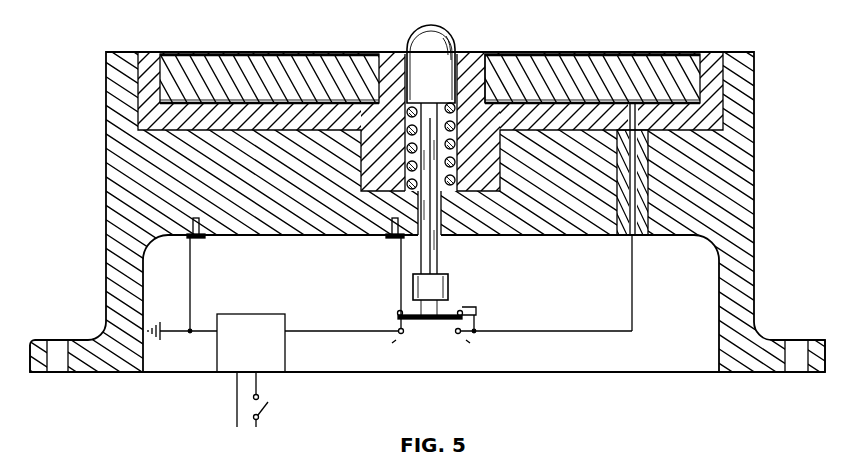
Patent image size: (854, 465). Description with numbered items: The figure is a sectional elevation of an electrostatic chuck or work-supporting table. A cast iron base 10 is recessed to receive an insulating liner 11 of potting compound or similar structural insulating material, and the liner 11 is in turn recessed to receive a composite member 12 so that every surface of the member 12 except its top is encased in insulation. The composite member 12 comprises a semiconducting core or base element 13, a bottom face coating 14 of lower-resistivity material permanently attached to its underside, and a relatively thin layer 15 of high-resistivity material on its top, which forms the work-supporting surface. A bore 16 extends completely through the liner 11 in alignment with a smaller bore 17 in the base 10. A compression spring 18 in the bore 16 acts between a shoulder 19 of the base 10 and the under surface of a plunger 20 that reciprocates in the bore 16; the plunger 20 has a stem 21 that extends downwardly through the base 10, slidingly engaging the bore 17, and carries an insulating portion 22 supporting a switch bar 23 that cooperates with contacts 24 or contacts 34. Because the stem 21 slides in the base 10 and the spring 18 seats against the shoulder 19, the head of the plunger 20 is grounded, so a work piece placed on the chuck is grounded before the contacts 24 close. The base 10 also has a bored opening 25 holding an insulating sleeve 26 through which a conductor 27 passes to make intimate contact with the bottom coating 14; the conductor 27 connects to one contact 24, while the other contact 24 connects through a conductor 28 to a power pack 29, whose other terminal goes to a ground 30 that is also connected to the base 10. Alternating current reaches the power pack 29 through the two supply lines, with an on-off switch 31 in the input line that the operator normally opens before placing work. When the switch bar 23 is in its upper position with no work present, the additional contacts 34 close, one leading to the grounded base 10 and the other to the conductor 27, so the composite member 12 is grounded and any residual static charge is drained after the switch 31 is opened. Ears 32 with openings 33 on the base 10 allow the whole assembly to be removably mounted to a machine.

The base 10 is at (314, 231).
The insulating liner 11 is at (146, 56).
The composite member 12 is at (658, 45).
The base element 13 is at (260, 58).
The bottom face coating 14 is at (380, 104).
The thin layer 15 is at (313, 55).
The bore 16 is at (463, 56).
The smaller bore 17 is at (441, 234).
The compression spring 18 is at (410, 120).
The shoulder 19 is at (440, 199).
The plunger 20 is at (410, 44).
The stem 21 is at (438, 262).
The insulating portion 22 is at (447, 306).
The switch bar 23 is at (400, 312).
The contacts 24 is at (443, 345).
The bored opening 25 is at (613, 226).
The insulating sleeve 26 is at (640, 234).
The conductor 27 is at (633, 300).
The conductor 28 is at (336, 330).
The power pack 29 is at (268, 352).
The ground 30 is at (162, 326).
The on-off switch 31 is at (266, 404).
The ears 32 is at (36, 340).
The openings 33 is at (60, 370).
The contacts 34 is at (397, 314).